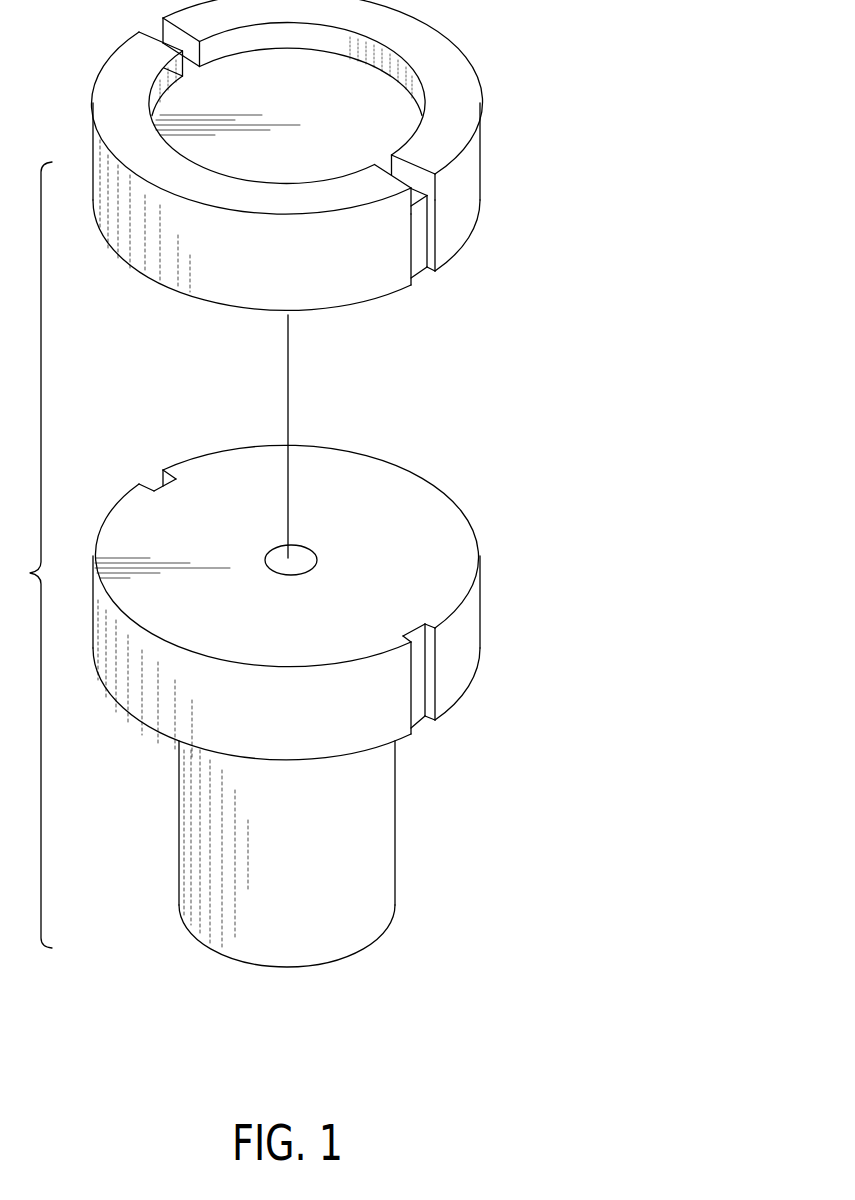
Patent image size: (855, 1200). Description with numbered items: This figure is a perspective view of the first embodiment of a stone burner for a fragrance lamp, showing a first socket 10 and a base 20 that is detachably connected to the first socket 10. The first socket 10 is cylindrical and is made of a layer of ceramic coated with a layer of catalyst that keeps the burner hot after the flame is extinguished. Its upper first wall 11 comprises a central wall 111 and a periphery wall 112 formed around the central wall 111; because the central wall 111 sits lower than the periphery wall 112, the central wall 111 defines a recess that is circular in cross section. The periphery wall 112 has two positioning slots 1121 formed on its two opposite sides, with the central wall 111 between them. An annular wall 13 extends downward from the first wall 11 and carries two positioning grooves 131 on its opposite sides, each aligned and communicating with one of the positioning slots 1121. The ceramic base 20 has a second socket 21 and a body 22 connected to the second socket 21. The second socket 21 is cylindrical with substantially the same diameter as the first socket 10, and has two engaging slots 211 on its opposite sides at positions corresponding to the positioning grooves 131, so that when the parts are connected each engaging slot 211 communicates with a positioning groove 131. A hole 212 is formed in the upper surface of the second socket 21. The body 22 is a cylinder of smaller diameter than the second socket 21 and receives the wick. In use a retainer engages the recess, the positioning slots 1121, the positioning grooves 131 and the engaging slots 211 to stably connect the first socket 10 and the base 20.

The first socket 10 is at (335, 165).
The first wall 11 is at (307, 107).
The central wall 111 is at (327, 70).
The periphery wall 112 is at (307, 107).
The positioning slots 1121 is at (177, 50).
The annular wall 13 is at (316, 235).
The positioning grooves 131 is at (422, 235).
The base 20 is at (328, 703).
The second socket 21 is at (319, 599).
The engaging slots 211 is at (162, 483).
The hole 212 is at (307, 557).
The body 22 is at (380, 845).